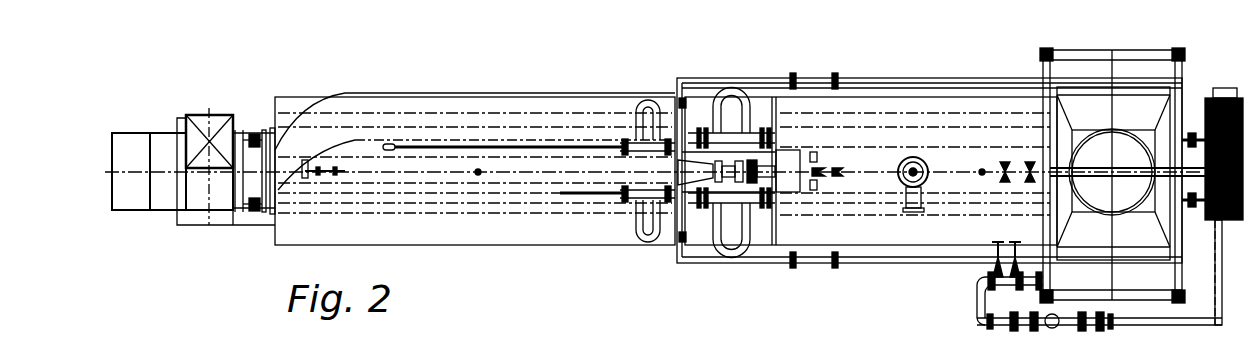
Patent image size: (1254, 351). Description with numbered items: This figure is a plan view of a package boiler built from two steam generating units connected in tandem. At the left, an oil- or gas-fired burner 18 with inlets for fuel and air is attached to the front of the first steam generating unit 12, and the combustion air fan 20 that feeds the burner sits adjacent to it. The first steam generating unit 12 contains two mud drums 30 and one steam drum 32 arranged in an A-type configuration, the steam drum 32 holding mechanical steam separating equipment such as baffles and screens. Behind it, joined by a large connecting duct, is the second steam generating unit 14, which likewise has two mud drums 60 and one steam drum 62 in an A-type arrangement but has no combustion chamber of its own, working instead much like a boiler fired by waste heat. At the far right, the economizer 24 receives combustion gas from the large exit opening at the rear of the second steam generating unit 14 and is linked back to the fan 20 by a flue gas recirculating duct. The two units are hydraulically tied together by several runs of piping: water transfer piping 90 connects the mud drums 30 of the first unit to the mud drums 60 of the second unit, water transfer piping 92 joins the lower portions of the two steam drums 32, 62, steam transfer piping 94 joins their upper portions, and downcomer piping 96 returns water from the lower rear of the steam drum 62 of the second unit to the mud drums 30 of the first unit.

The first steam generating unit 12 is at (600, 275).
The second steam generating unit 14 is at (922, 277).
The oil- or gas-fired burner 18 is at (218, 232).
The combustion air fan 20 is at (222, 108).
The economizer 24 is at (1150, 112).
The mud drums 30 is at (515, 208).
The steam drum 32 is at (605, 175).
The mud drums 60 is at (882, 137).
The steam drum 62 is at (873, 178).
The water transfer piping 90 is at (745, 97).
The water transfer piping 92 is at (728, 180).
The steam transfer piping 94 is at (636, 110).
The downcomer piping 96 is at (836, 80).